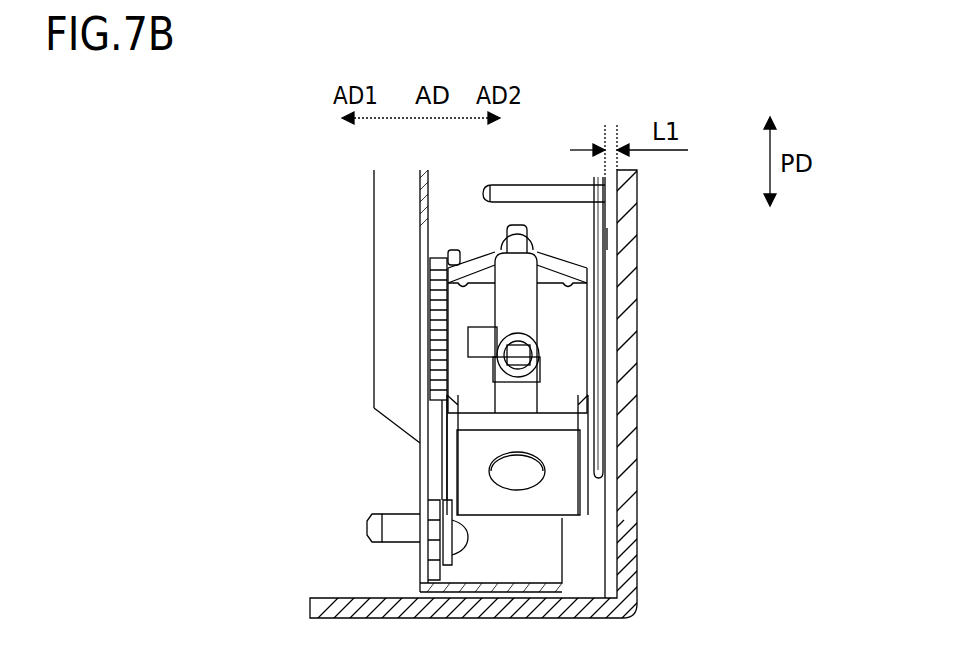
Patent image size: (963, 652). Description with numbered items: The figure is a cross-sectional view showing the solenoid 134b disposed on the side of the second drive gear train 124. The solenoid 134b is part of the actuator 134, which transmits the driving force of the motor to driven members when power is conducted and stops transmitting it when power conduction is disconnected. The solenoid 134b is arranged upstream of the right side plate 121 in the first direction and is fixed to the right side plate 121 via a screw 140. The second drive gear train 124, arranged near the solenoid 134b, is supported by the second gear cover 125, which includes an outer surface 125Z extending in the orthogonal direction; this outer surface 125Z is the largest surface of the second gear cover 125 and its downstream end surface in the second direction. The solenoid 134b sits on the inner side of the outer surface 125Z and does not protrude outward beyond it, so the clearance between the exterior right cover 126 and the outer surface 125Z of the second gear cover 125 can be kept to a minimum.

The right side plate 121 is at (420, 240).
The second drive gear train 124 is at (440, 306).
The second gear cover 125 is at (487, 217).
The outer surface 125Z is at (608, 237).
The exterior right cover 126 is at (627, 437).
The actuator 134 is at (396, 378).
The solenoid 134b is at (472, 458).
The screw 140 is at (467, 544).